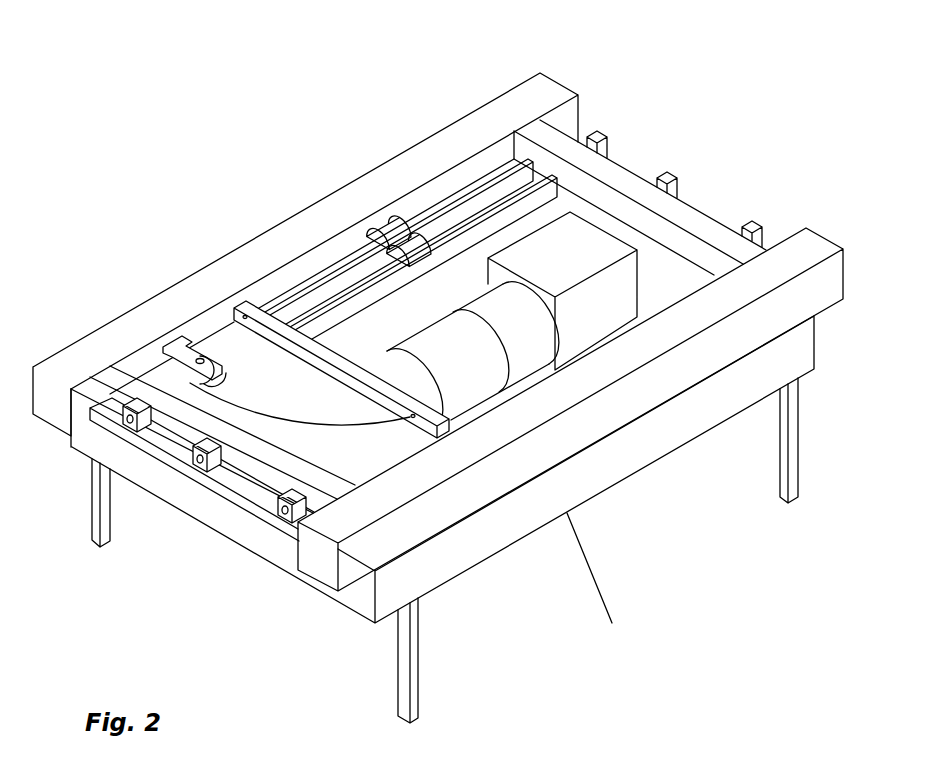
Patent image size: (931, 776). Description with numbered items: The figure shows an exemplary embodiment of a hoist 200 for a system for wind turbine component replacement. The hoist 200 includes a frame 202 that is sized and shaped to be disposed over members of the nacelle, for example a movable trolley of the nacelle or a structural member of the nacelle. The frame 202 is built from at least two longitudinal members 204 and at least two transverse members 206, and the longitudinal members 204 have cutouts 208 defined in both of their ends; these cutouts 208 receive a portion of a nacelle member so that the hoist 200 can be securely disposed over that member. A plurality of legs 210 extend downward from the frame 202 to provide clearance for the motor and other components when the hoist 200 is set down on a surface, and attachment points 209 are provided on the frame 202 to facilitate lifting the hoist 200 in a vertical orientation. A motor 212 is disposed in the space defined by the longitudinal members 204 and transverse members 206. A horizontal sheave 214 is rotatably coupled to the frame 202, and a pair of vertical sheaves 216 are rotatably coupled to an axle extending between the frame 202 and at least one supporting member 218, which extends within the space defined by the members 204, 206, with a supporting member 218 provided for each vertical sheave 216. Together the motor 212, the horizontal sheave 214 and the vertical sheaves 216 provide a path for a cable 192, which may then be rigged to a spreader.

The hoist 200 is at (173, 70).
The frame 202 is at (456, 88).
The longitudinal members 204 is at (246, 257).
The transverse members 206 is at (131, 372).
The cutouts 208 is at (832, 332).
The attachment points 209 is at (676, 193).
The legs 210 is at (797, 487).
The motor 212 is at (576, 260).
The horizontal sheave 214 is at (222, 365).
The vertical sheaves 216 is at (413, 237).
The supporting member 218 is at (337, 286).
The cable 192 is at (597, 580).